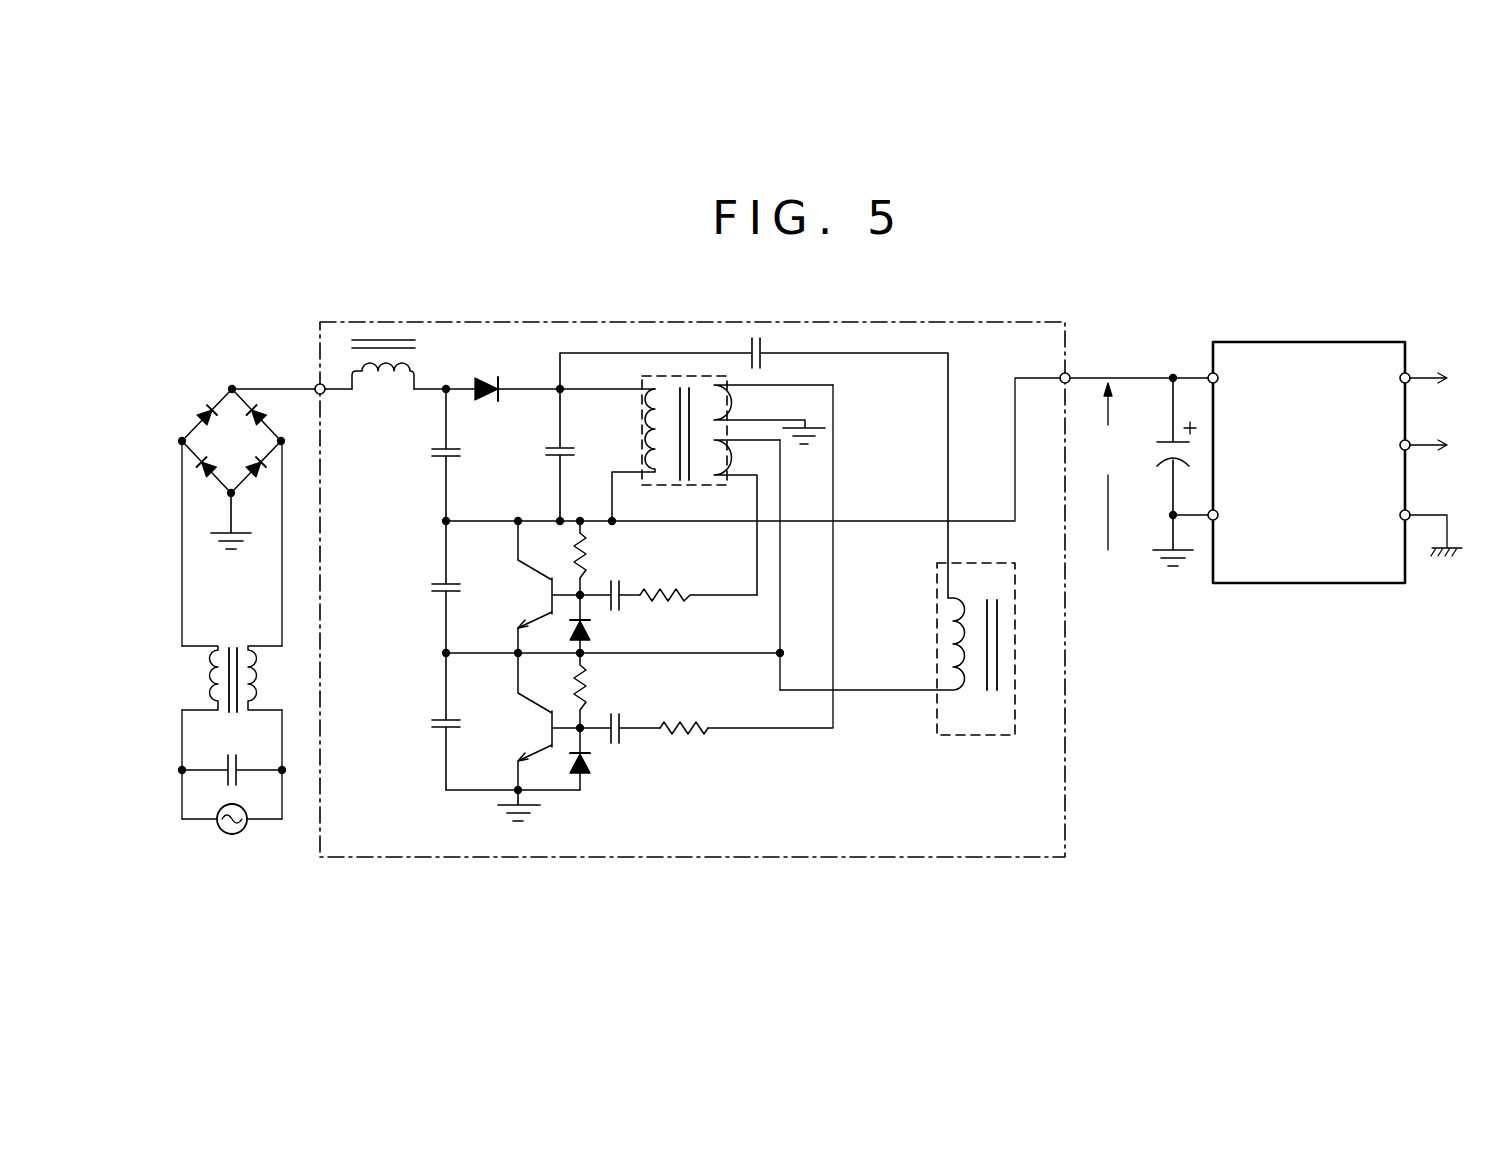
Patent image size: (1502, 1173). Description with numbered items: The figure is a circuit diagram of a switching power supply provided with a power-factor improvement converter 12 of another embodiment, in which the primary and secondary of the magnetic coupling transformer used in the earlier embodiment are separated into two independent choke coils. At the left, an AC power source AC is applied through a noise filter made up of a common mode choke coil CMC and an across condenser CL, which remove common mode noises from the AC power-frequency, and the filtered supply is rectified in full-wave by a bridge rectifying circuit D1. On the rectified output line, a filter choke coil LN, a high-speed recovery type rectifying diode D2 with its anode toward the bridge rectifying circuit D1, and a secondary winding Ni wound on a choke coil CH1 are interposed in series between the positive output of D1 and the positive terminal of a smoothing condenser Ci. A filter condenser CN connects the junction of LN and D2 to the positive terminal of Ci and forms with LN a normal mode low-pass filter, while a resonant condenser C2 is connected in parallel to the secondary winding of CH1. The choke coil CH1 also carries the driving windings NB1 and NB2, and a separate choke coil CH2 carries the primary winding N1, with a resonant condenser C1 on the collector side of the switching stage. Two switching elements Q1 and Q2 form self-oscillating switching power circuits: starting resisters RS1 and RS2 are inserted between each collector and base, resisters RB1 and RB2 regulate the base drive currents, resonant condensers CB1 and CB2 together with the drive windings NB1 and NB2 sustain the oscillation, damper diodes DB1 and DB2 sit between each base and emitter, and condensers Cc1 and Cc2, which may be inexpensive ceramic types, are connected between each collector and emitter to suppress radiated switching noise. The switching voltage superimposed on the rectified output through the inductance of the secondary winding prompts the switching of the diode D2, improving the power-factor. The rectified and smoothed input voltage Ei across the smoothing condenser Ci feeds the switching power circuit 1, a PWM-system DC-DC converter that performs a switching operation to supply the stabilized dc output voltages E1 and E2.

The power-factor improvement converter 12 is at (444, 322).
The switching power circuit 1 is at (1303, 342).
The bridge rectifying circuit D1 is at (250, 456).
The common mode choke coil CMC is at (232, 664).
The across condenser CL is at (232, 761).
The AC power source AC is at (232, 837).
The filter choke coil LN is at (383, 378).
The filter condenser CN is at (423, 455).
The high-speed recovery type rectifying diode D2 is at (507, 397).
The resonant condenser C2 is at (527, 455).
The resonant condenser C1 is at (754, 468).
The choke coil CH1 is at (705, 485).
The primary winding N1 is at (642, 412).
The drive winding NB1 is at (747, 517).
The drive winding NB2 is at (773, 414).
The switching element Q1 is at (549, 587).
The switching element Q2 is at (549, 721).
The starting resister RS1 is at (556, 558).
The starting resister RS2 is at (556, 690).
The resister RB1 is at (698, 579).
The resister RB2 is at (684, 712).
The resonant condenser CB1 is at (610, 584).
The resonant condenser CB2 is at (620, 717).
The damper diode DB1 is at (602, 624).
The damper diode DB2 is at (602, 759).
The condenser Cc1 is at (461, 587).
The condenser Cc2 is at (461, 721).
The choke coil CH2 is at (953, 636).
The smoothing condenser Ci is at (1172, 471).
The input voltage Ei is at (1106, 466).
The dc output voltage E1 is at (1442, 379).
The dc output voltage E2 is at (1444, 446).